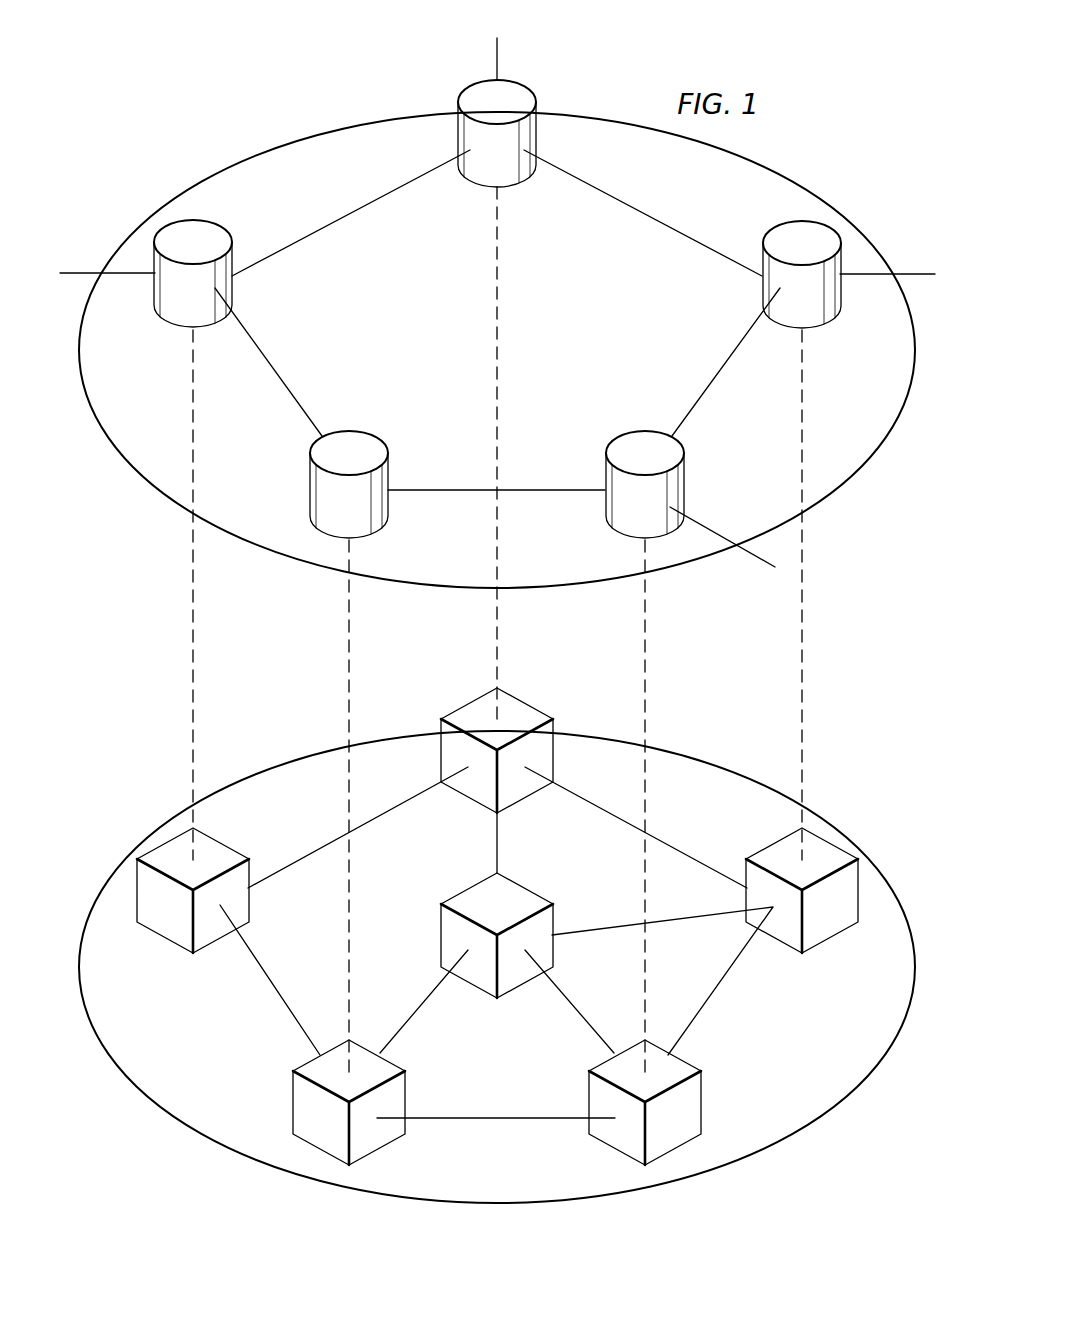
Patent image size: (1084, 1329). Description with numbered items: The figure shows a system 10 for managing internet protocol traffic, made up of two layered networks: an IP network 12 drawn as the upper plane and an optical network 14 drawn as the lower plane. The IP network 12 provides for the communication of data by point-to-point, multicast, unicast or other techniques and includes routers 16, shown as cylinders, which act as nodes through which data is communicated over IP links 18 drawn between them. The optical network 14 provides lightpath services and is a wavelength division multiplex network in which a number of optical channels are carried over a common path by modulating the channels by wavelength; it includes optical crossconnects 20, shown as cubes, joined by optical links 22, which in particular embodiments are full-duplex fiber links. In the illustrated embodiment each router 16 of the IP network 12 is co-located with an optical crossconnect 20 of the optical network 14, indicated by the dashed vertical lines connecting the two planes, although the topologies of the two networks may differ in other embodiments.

The system 10 is at (322, 58).
The IP network 12 is at (263, 154).
The optical network 14 is at (760, 1157).
The router 16 is at (513, 96).
The IP link 18 is at (490, 63).
The optical crossconnect (OXC) 20 is at (507, 702).
The optical link 22 is at (584, 799).